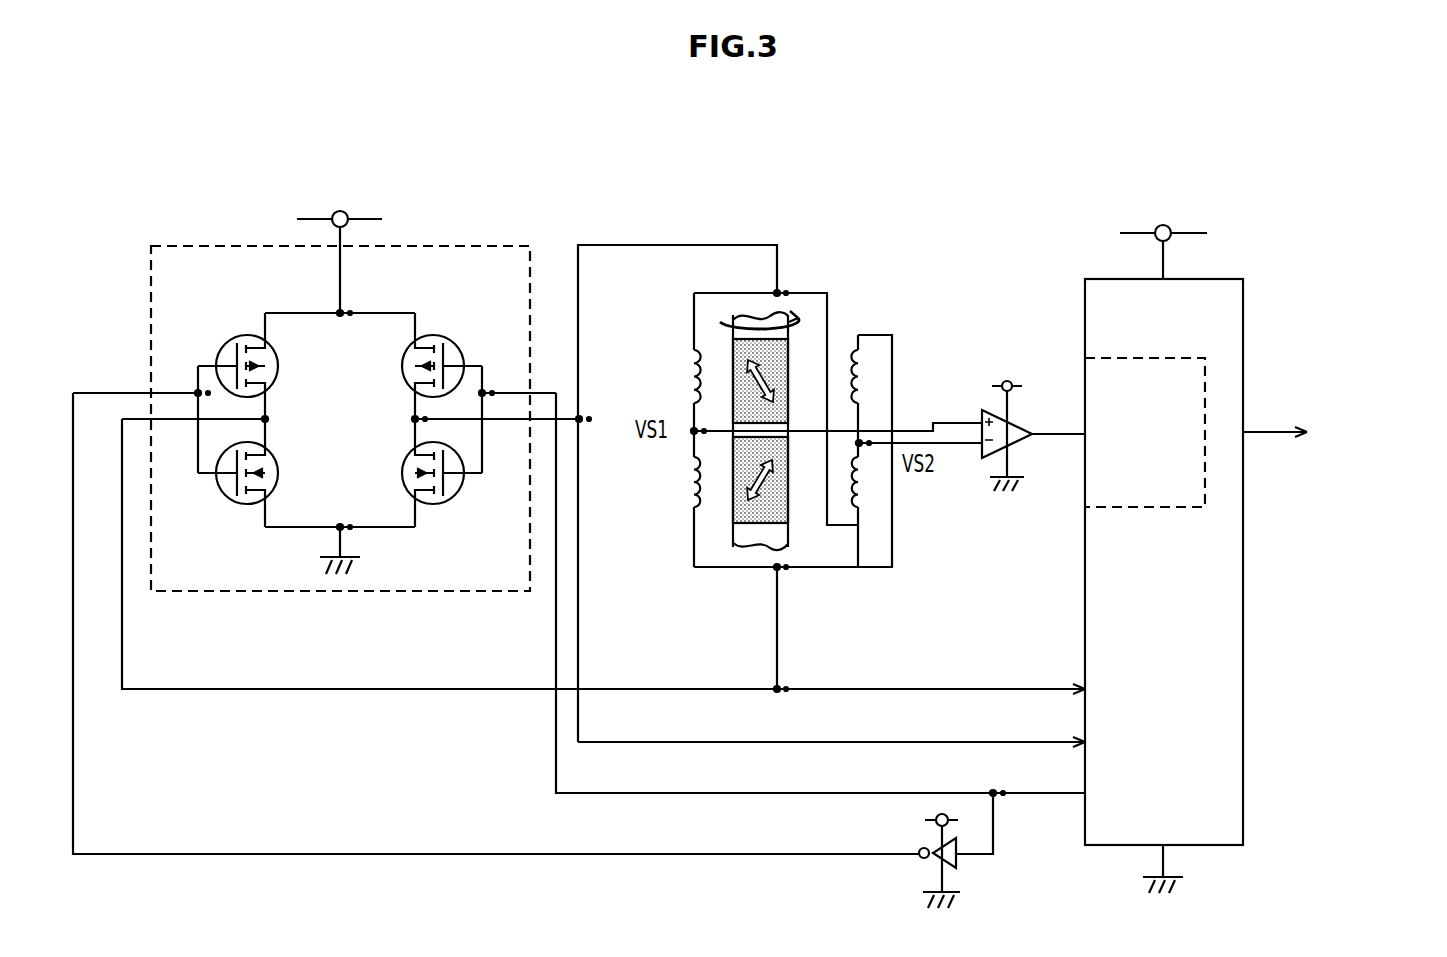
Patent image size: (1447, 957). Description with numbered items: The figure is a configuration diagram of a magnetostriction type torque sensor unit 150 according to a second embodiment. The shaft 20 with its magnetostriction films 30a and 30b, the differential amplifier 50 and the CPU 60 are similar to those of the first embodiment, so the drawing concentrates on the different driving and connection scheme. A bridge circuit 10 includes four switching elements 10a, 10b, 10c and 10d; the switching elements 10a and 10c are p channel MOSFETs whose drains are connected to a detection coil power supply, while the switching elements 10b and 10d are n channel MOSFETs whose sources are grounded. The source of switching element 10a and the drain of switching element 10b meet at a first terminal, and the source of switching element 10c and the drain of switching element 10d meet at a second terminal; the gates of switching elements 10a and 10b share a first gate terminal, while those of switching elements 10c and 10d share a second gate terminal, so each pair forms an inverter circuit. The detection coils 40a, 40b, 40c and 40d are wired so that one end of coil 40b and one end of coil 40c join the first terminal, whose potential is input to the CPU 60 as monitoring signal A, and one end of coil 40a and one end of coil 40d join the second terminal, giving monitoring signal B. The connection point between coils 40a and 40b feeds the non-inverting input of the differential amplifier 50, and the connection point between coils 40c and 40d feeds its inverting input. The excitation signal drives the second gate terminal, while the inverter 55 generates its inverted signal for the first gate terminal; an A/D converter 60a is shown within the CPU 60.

The bridge circuit 10 is at (186, 245).
The switching element 10a is at (245, 336).
The switching element 10b is at (235, 505).
The switching element 10c is at (445, 336).
The switching element 10d is at (443, 505).
The shaft 20 is at (734, 546).
The magnetostriction film 30a is at (778, 500).
The magnetostriction film 30b is at (782, 355).
The detection coil 40a is at (693, 373).
The detection coil 40b is at (693, 485).
The detection coil 40c is at (860, 382).
The detection coil 40d is at (860, 478).
The differential amplifier 50 is at (1018, 431).
The inverter 55 is at (957, 858).
The CPU 60 is at (1243, 317).
The A/D converter 60a is at (1160, 508).
The magnetostriction type torque sensor unit 150 is at (1037, 110).